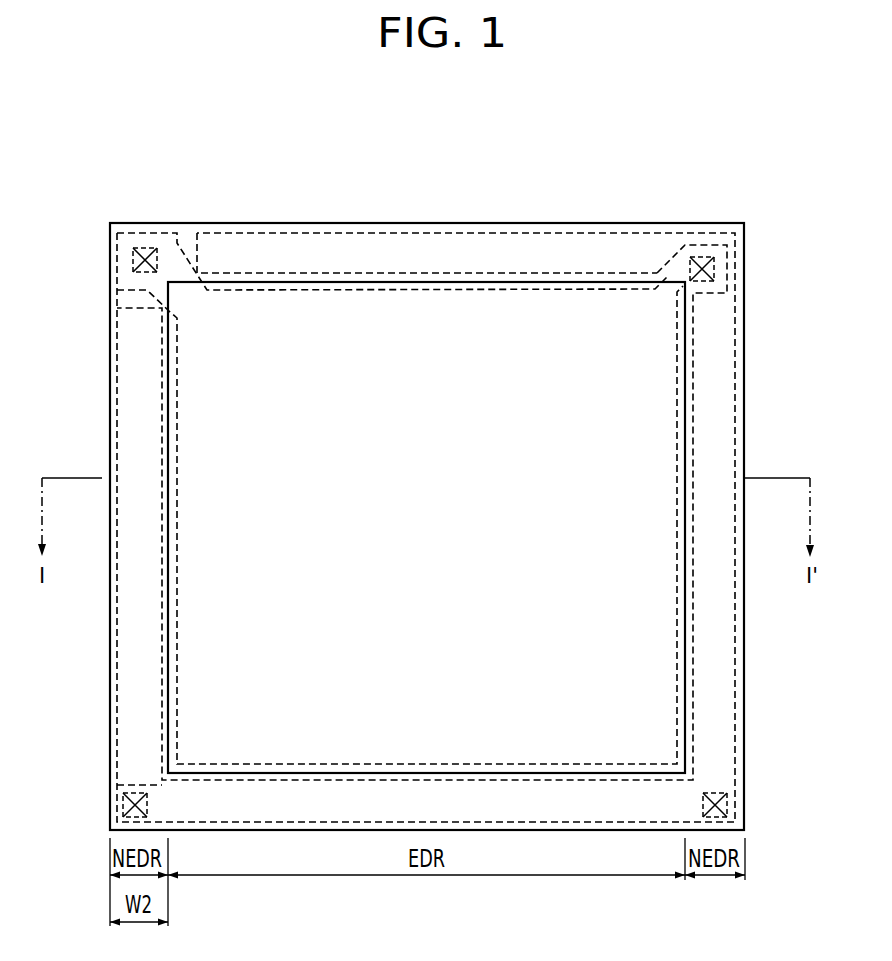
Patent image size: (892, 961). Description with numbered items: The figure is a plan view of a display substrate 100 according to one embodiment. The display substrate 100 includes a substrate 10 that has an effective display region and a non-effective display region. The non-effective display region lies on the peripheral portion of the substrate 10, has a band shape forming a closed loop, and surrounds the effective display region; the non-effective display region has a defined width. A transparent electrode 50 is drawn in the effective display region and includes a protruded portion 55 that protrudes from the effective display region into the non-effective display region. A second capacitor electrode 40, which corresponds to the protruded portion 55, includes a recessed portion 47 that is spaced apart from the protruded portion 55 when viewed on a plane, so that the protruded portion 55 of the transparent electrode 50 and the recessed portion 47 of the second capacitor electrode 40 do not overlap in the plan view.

The display substrate 100 is at (467, 211).
The substrate 10 is at (110, 651).
The second capacitor electrode 40 is at (712, 415).
The recessed portion 47 is at (188, 238).
The transparent electrode 50 is at (220, 407).
The protruded portion 55 is at (142, 238).